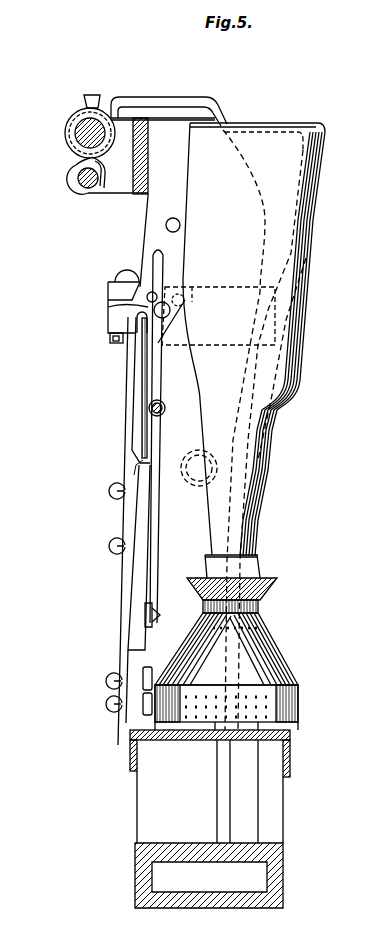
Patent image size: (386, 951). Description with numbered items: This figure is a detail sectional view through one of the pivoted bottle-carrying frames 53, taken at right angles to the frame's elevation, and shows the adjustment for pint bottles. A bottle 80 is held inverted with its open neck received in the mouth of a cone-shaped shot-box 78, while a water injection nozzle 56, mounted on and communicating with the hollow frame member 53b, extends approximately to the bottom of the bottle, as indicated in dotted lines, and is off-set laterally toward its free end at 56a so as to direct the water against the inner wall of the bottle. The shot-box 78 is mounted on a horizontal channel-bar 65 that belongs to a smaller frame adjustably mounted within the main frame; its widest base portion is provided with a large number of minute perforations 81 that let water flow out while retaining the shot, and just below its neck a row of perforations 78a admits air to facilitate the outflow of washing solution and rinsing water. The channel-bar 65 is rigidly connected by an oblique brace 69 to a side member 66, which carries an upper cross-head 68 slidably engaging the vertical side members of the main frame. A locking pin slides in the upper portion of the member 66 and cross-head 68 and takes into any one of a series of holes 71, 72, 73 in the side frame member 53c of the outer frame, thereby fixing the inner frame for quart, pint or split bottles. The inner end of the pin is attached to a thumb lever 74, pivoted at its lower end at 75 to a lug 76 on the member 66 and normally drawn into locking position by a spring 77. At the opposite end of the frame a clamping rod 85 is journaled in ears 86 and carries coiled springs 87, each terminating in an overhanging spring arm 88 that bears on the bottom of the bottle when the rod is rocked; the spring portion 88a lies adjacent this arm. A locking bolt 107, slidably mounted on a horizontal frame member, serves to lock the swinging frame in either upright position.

The bottle-carrying frame 53 is at (134, 148).
The hollow frame member 53b is at (283, 878).
The side frame member 53c is at (145, 785).
The water injection nozzle 56 is at (230, 823).
The off-set portion of nozzle 56a is at (305, 258).
The channel-bar 65 is at (290, 760).
The side member 66 is at (168, 497).
The upper cross-head 68 is at (119, 293).
The oblique brace 69 is at (127, 560).
The hole 71 is at (150, 405).
The hole 72 is at (108, 308).
The hole 73 is at (165, 226).
The thumb lever 74 is at (166, 264).
The pivot 75 is at (161, 615).
The lug 76 is at (147, 616).
The spring 77 is at (149, 412).
The cone-shaped shot-box 78 is at (267, 648).
The row of perforations 78a is at (240, 633).
The bottle 80 is at (305, 350).
The minute perforations 81 is at (297, 724).
The rod 85 is at (92, 95).
The ear 86 is at (107, 195).
The spring 87 is at (73, 124).
The spring arm 88 is at (160, 97).
The spring strap 88a is at (90, 161).
The locking bolt 107 is at (80, 182).